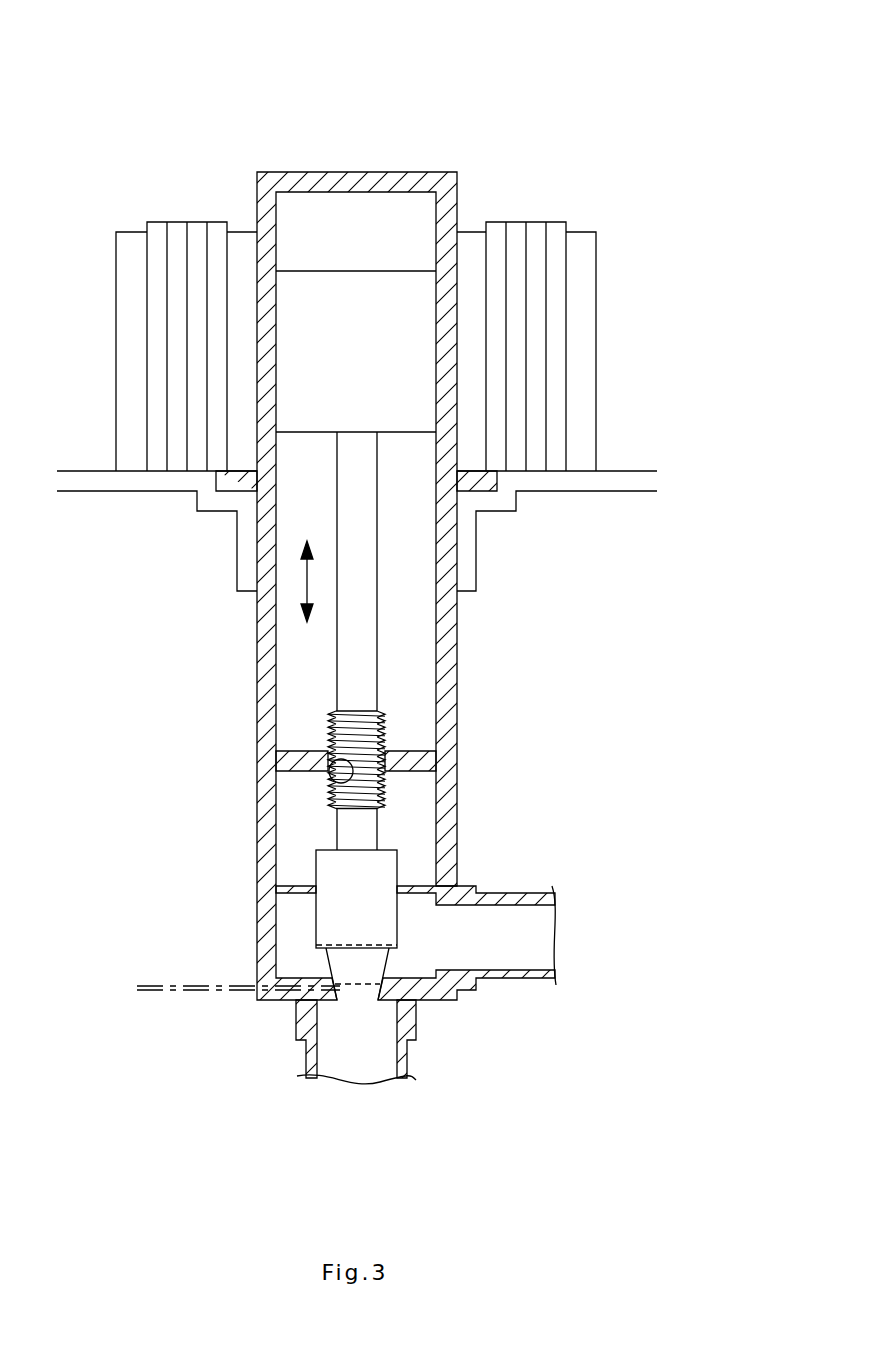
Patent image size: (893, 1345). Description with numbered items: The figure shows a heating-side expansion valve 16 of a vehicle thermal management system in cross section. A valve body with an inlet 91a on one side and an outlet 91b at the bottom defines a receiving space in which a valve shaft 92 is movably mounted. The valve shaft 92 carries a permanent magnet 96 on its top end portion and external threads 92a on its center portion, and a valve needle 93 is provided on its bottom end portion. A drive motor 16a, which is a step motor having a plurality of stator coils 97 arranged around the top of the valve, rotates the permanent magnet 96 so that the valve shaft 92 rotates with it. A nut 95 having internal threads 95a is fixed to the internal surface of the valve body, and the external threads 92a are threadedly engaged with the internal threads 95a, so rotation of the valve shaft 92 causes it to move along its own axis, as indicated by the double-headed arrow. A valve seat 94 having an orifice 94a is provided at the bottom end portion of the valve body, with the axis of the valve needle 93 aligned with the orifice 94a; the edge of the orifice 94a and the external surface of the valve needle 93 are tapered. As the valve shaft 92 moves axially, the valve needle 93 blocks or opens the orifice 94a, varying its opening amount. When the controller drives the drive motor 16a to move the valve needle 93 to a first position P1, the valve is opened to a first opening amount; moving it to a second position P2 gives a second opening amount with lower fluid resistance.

The heating-side expansion valve 16 is at (38, 28).
The drive motor 16a is at (478, 112).
The permanent magnet 96 is at (357, 271).
The stator coils 97 is at (183, 222).
The valve shaft 92 is at (357, 673).
The external threads 92a is at (386, 728).
The nut 95 is at (300, 751).
The internal threads 95a is at (331, 784).
The valve needle 93 is at (310, 970).
The valve seat 94 is at (382, 993).
The orifice 94a is at (357, 1000).
The inlet 91a is at (507, 880).
The outlet 91b is at (300, 1053).
The first position P1 is at (157, 991).
The second position P2 is at (157, 985).